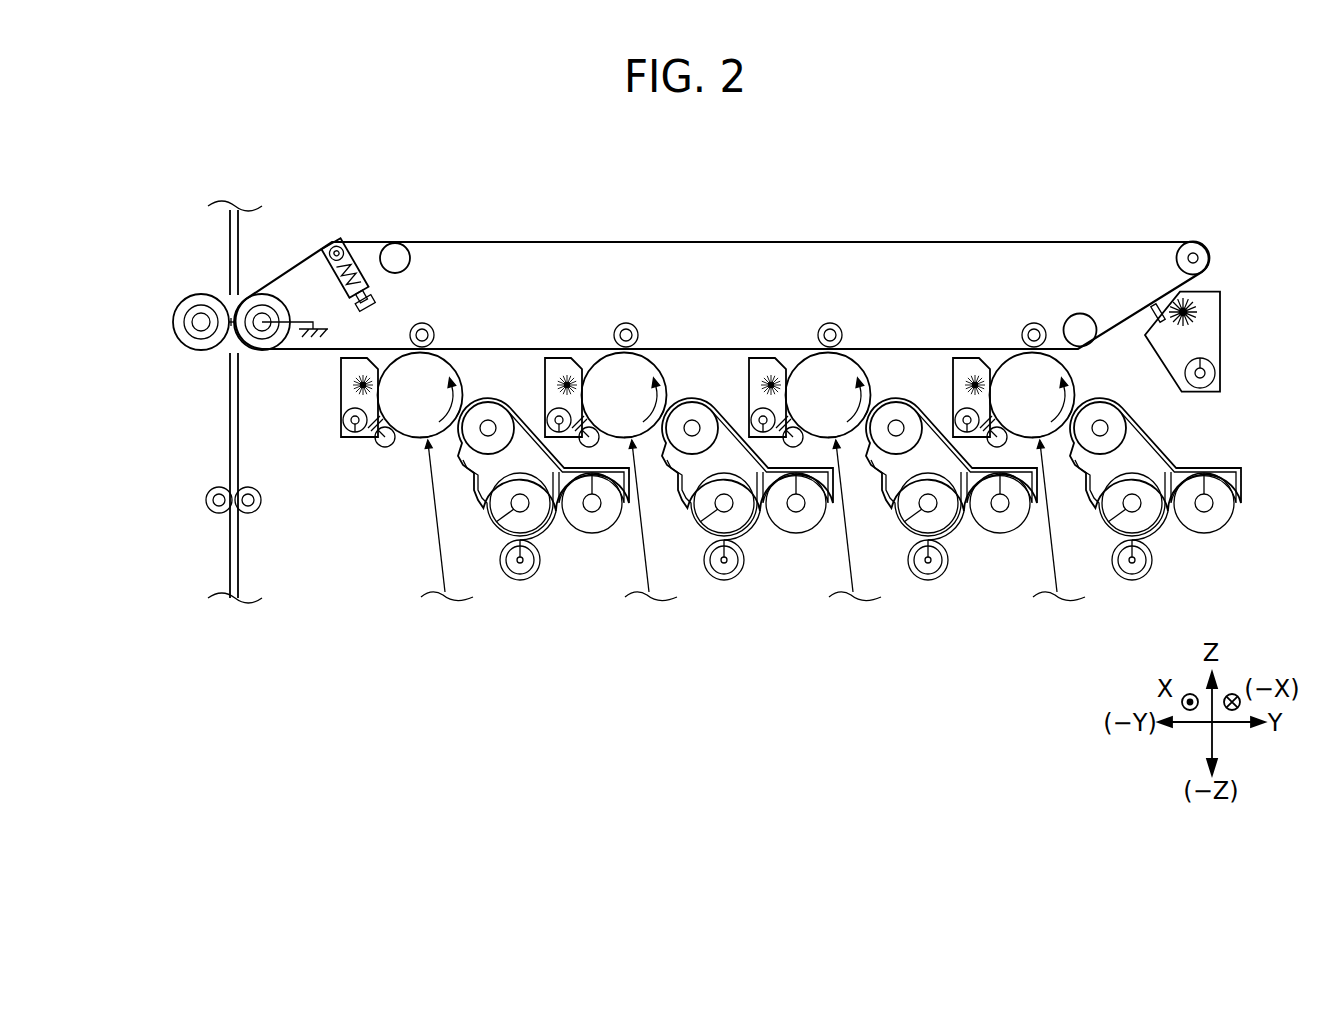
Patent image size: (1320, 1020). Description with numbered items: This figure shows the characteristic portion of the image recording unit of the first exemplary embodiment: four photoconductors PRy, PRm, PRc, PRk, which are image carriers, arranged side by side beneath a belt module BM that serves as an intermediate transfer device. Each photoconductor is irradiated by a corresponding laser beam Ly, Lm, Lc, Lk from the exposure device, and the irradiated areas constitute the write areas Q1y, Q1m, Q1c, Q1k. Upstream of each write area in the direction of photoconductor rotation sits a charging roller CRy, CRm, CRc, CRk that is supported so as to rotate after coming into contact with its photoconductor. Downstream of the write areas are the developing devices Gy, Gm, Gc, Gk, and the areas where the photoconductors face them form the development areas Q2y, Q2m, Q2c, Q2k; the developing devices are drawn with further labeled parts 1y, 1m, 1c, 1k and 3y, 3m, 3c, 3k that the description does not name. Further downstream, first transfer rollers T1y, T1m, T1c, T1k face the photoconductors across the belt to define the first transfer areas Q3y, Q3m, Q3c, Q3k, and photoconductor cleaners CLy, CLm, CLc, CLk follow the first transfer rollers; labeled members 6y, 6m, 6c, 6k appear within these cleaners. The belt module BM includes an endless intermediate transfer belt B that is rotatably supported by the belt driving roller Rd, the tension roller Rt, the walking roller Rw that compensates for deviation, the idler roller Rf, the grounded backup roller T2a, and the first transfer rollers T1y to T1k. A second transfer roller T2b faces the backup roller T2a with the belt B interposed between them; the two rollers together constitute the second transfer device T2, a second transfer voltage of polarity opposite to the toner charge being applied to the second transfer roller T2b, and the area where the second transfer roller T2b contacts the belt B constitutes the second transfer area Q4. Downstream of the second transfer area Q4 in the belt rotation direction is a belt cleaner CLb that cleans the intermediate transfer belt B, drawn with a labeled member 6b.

The second transfer device T2 is at (162, 337).
The backup roller T2a is at (265, 296).
The second transfer roller T2b is at (193, 296).
The second transfer area Q4 is at (228, 340).
The belt module BM is at (750, 256).
The intermediate transfer belt B is at (490, 246).
The tension roller Rt is at (338, 248).
The walking roller Rw is at (395, 243).
The belt driving roller Rd is at (1211, 259).
The idler roller Rf is at (1082, 314).
The belt cleaner CLb is at (1231, 325).
The belt cleaner roller 6b is at (1215, 374).
The photoconductor PRk is at (396, 371).
The photoconductor PRc is at (610, 319).
The photoconductor PRm is at (811, 319).
The photoconductor PRy is at (1019, 319).
The photoconductor cleaner CLk is at (341, 382).
The photoconductor cleaner CLc is at (549, 370).
The photoconductor cleaner CLm is at (750, 370).
The photoconductor cleaner CLy is at (957, 370).
The cleaner conveying member (black) 6k is at (343, 418).
The cleaner conveying member (cyan) 6c is at (539, 397).
The cleaner conveying member (magenta) 6m is at (741, 397).
The cleaner conveying member (yellow) 6y is at (947, 397).
The charging roller CRk is at (385, 447).
The charging roller CRc is at (563, 350).
The charging roller CRm is at (764, 350).
The charging roller CRy is at (971, 350).
The first transfer roller T1k is at (431, 325).
The first transfer roller T1c is at (640, 300).
The first transfer roller T1m is at (846, 300).
The first transfer roller T1y is at (1048, 300).
The write area Q1k is at (437, 444).
The write area Q1c is at (659, 496).
The write area Q1m is at (865, 496).
The write area Q1y is at (1067, 496).
The development area Q2k is at (459, 400).
The development area Q2c is at (677, 367).
The development area Q2m is at (882, 367).
The development area Q2y is at (1099, 382).
The first transfer area Q3k is at (414, 356).
The first transfer area Q3c is at (612, 321).
The first transfer area Q3m is at (816, 321).
The first transfer area Q3y is at (1020, 321).
The developing device Gk is at (566, 542).
The developing device Gc is at (747, 500).
The developing device Gm is at (951, 500).
The developing device Gy is at (1155, 500).
The developer container (black) 1k is at (538, 574).
The developer container (cyan) 1c is at (746, 567).
The developer container (magenta) 1m is at (952, 567).
The developer container (yellow) 1y is at (1154, 567).
The toner supply roller (black) 3k is at (520, 566).
The toner supply roller (cyan) 3c is at (721, 583).
The toner supply roller (magenta) 3m is at (922, 583).
The toner supply roller (yellow) 3y is at (1128, 583).
The laser beam Lk is at (440, 567).
The laser beam Lc is at (634, 520).
The laser beam Lm is at (835, 520).
The laser beam Ly is at (1042, 520).